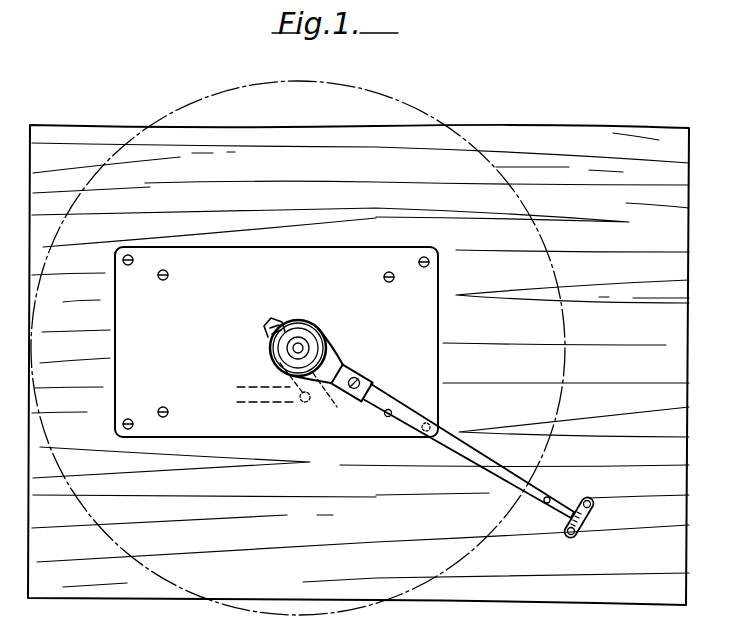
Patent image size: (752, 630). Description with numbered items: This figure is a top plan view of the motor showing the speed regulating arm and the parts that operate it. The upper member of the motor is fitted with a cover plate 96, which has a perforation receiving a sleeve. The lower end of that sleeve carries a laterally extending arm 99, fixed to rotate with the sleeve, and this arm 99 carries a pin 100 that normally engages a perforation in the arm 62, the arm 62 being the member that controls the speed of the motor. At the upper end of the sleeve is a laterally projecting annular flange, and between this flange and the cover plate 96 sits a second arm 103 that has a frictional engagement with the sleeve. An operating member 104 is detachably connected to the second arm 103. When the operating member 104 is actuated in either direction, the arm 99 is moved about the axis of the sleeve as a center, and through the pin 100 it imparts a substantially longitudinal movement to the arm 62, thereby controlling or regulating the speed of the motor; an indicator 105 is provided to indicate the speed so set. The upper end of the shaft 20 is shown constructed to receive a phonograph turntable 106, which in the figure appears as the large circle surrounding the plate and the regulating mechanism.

The shaft 20 is at (302, 347).
The cover plate 96 is at (276, 342).
The second arm 103 is at (337, 363).
The operating member 104 is at (486, 456).
The indicator 105 is at (592, 518).
The phonograph turntable 106 is at (563, 370).
The laterally extending arm 99 is at (336, 401).
The pin 100 is at (305, 403).
The arm 62 is at (253, 403).